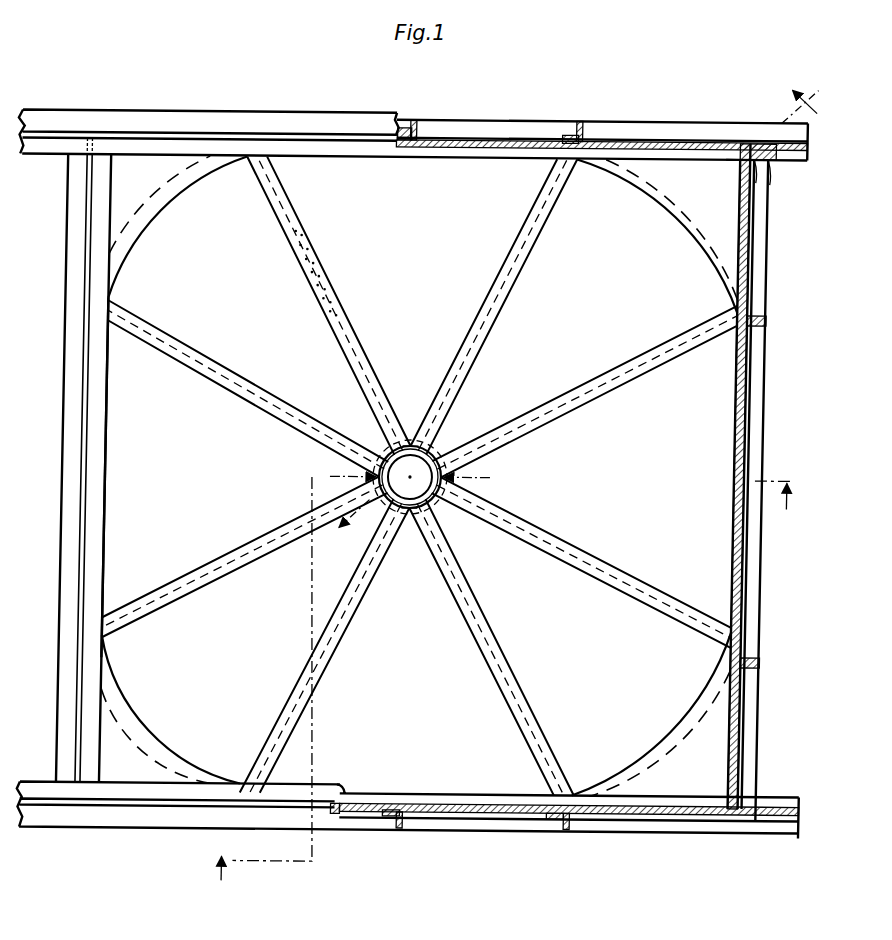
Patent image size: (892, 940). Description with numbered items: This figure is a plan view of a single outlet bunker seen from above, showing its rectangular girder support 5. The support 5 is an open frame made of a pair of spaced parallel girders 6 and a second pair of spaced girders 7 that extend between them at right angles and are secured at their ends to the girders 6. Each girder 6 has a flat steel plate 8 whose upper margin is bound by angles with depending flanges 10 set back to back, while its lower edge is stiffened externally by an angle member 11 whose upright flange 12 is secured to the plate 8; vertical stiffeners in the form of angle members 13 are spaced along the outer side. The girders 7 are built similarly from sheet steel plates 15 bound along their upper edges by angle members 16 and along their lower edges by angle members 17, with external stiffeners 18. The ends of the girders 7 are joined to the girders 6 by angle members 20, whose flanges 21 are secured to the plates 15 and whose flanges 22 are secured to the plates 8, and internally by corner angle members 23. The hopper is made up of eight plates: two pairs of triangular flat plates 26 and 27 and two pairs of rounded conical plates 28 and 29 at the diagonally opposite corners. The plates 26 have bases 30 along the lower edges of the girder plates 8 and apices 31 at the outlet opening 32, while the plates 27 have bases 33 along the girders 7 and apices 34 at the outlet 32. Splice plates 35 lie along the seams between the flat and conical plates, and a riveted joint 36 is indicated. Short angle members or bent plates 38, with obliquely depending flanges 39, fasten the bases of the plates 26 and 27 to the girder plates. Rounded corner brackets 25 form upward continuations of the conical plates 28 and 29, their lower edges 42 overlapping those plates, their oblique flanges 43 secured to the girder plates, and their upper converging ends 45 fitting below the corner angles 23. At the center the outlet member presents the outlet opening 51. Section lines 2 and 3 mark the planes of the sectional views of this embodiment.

The section line 2- 2 is at (488, 680).
The section line 3- 3 is at (336, 552).
The bunker support 5 is at (386, 463).
The girders 6 is at (226, 113).
The girders 7 is at (414, 480).
The plate 8 is at (468, 147).
The depending flanges 10 is at (146, 832).
The angle member 11 is at (538, 124).
The upright flange 12 is at (493, 135).
The angle members 13 is at (410, 124).
The sheet steel plates 15 is at (84, 578).
The angle members 16 is at (88, 424).
The angle members 17 is at (733, 482).
The external stiffeners 18 is at (757, 319).
The angle members 20 is at (762, 176).
The flanges 21 is at (755, 186).
The flanges 22 is at (765, 159).
The angle members 23 is at (735, 162).
The corner brackets 25 is at (688, 748).
The flat plates 26 is at (404, 457).
The flat plates 27 is at (396, 471).
The conical plates 28 is at (407, 475).
The conical plates 29 is at (407, 478).
The bases 30 is at (484, 794).
The apices 31 is at (412, 398).
The outlet opening 32 is at (388, 452).
The bases 33 is at (109, 513).
The apices 34 is at (328, 476).
The splice plates 35 is at (336, 358).
The riveted joint 36 is at (298, 244).
The angle members 38 is at (372, 792).
The obliquely depending flanges 39 is at (436, 800).
The lower edges 42 is at (628, 765).
The oblique flanges 43 is at (746, 262).
The upper converging ends 45 is at (706, 214).
The outlet opening 51 is at (420, 490).